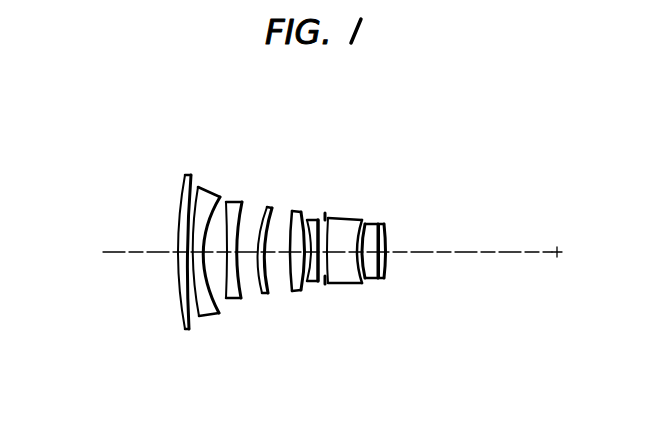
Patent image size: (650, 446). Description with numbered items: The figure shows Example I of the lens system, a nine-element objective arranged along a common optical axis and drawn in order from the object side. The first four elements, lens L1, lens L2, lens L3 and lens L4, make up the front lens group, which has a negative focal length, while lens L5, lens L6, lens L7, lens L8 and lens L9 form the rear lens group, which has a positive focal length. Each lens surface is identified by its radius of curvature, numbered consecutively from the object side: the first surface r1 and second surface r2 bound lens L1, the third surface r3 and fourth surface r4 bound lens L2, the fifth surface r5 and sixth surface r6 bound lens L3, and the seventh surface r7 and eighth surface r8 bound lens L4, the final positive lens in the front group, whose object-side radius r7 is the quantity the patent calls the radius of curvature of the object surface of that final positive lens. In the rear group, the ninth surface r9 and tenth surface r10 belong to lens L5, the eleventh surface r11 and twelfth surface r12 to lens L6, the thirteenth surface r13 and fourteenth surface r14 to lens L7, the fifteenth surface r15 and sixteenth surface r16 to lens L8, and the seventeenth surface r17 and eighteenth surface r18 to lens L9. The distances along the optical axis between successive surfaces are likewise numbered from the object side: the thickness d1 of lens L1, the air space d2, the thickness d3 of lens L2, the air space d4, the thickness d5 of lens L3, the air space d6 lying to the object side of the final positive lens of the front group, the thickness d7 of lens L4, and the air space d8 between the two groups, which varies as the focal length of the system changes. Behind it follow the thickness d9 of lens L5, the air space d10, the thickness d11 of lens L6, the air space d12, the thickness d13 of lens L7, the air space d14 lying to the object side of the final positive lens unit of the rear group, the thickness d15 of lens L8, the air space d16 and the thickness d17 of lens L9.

The first lens L1 is at (166, 249).
The second lens L2 is at (197, 257).
The third lens L3 is at (235, 255).
The fourth lens L4 is at (272, 256).
The fifth lens L5 is at (304, 265).
The sixth lens L6 is at (336, 245).
The seventh lens L7 is at (374, 263).
The eighth lens L8 is at (409, 242).
The ninth lens L9 is at (432, 218).
The radius of curvature of first surface r1 is at (183, 178).
The radius of curvature of second surface r2 is at (189, 177).
The radius of curvature of third surface r3 is at (198, 188).
The radius of curvature of fourth surface r4 is at (208, 192).
The radius of curvature of fifth surface r5 is at (226, 202).
The radius of curvature of sixth surface r6 is at (240, 202).
The radius of curvature of seventh surface r7 is at (265, 206).
The radius of curvature of eighth surface r8 is at (271, 207).
The radius of curvature of ninth surface r9 is at (292, 210).
The radius of curvature of tenth surface r10 is at (302, 212).
The radius of curvature of eleventh surface r11 is at (308, 220).
The radius of curvature of twelfth surface r12 is at (318, 220).
The radius of curvature of thirteenth surface r13 is at (336, 219).
The radius of curvature of fourteenth surface r14 is at (358, 219).
The radius of curvature of fifteenth surface r15 is at (372, 222).
The radius of curvature of sixteenth surface r16 is at (378, 223).
The radius of curvature of seventeenth surface r17 is at (387, 226).
The radius of curvature of eighteenth surface r18 is at (393, 230).
The axial distance between first and second surfaces d1 is at (177, 257).
The axial distance between second and third surfaces d2 is at (186, 266).
The axial distance between third and fourth surfaces d3 is at (192, 277).
The axial distance between fourth and fifth surfaces d4 is at (220, 298).
The axial distance between fifth and sixth surfaces d5 is at (231, 300).
The axial distance between sixth and seventh surfaces d6 is at (251, 295).
The axial distance between seventh and eighth surfaces d7 is at (266, 294).
The axial distance between eighth and ninth surfaces d8 is at (284, 291).
The axial distance between ninth and tenth surfaces d9 is at (300, 293).
The axial distance between tenth and eleventh surfaces d10 is at (305, 288).
The axial distance between eleventh and twelfth surfaces d11 is at (317, 283).
The axial distance between twelfth and thirteenth surfaces d12 is at (330, 284).
The axial distance between thirteenth and fourteenth surfaces d13 is at (353, 285).
The axial distance between fourteenth and fifteenth surfaces d14 is at (388, 270).
The axial distance between fifteenth and sixteenth surfaces d15 is at (388, 265).
The axial distance between sixteenth and seventeenth surfaces d16 is at (388, 261).
The axial distance between seventeenth and eighteenth surfaces d17 is at (388, 256).